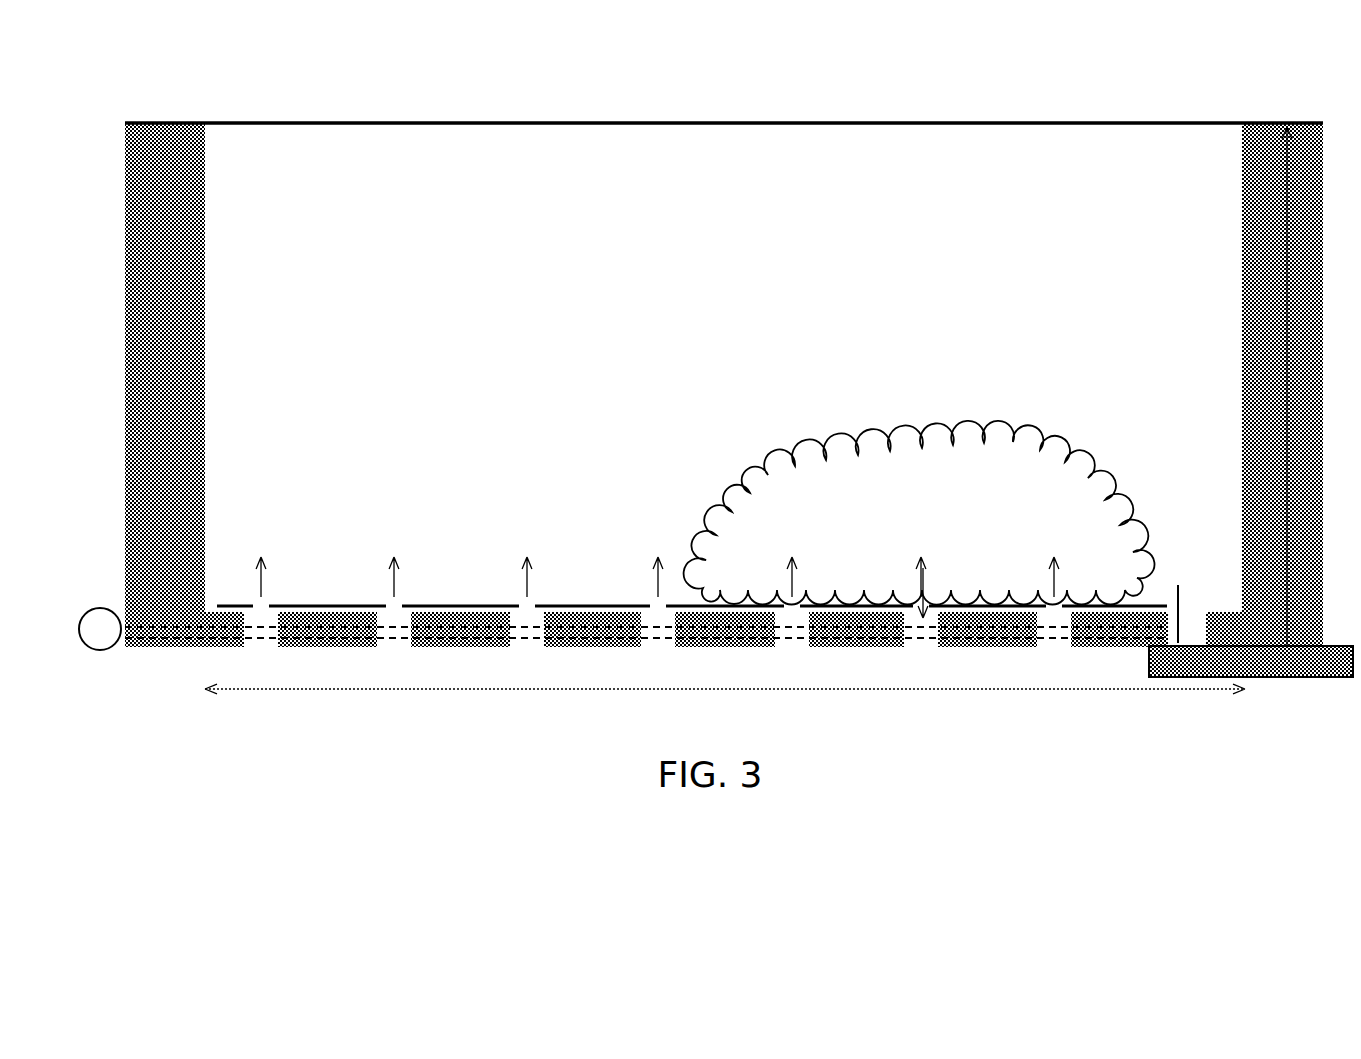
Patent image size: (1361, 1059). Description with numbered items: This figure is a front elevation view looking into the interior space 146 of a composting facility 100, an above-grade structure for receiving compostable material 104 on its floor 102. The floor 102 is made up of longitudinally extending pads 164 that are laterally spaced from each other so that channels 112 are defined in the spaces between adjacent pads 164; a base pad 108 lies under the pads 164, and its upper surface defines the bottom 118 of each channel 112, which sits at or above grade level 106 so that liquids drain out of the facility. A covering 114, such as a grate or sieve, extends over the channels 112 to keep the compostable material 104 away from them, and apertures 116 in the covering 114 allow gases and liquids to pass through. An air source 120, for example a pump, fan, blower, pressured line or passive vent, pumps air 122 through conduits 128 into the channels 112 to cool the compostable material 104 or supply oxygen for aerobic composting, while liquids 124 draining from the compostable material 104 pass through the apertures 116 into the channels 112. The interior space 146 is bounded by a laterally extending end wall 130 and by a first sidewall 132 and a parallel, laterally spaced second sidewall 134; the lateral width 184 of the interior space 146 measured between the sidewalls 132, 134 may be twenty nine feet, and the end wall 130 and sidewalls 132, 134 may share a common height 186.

The composting facility 100 is at (976, 80).
The floor 102 is at (687, 558).
The compostable material 104 is at (1013, 441).
The grade level 106 is at (1228, 630).
The base pad 108 is at (1267, 667).
The channel 112 is at (279, 654).
The covering 114 is at (582, 604).
The aperture 116 is at (277, 579).
The bottom of channel 118 is at (1166, 603).
The air source 120 is at (100, 608).
The air 122 is at (257, 590).
The liquids 124 is at (923, 583).
The conduit 128 is at (259, 638).
The end wall 130 is at (440, 122).
The first sidewall 132 is at (193, 250).
The second sidewall 134 is at (1255, 252).
The interior space 146 is at (720, 306).
The pad 164 is at (328, 648).
The lateral width 184 is at (560, 691).
The common height 186 is at (1287, 170).